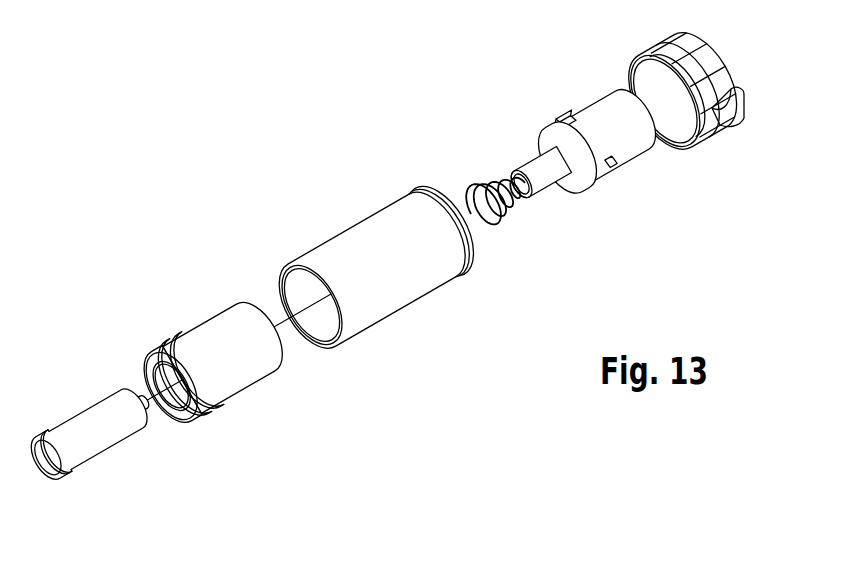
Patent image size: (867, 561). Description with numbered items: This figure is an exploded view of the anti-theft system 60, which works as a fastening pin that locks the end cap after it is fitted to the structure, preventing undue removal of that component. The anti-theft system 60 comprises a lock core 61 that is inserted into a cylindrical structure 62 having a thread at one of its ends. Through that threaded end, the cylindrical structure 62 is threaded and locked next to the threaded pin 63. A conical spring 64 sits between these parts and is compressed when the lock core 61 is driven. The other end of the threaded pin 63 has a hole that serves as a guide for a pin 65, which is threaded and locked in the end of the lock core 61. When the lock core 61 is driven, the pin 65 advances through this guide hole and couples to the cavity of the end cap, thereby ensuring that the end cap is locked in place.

The anti-theft system 60 is at (300, 157).
The lock core 61 is at (592, 103).
The cylindrical structure 62 is at (382, 273).
The threaded pin 63 is at (207, 318).
The conical spring 64 is at (487, 181).
The pin 65 is at (107, 438).